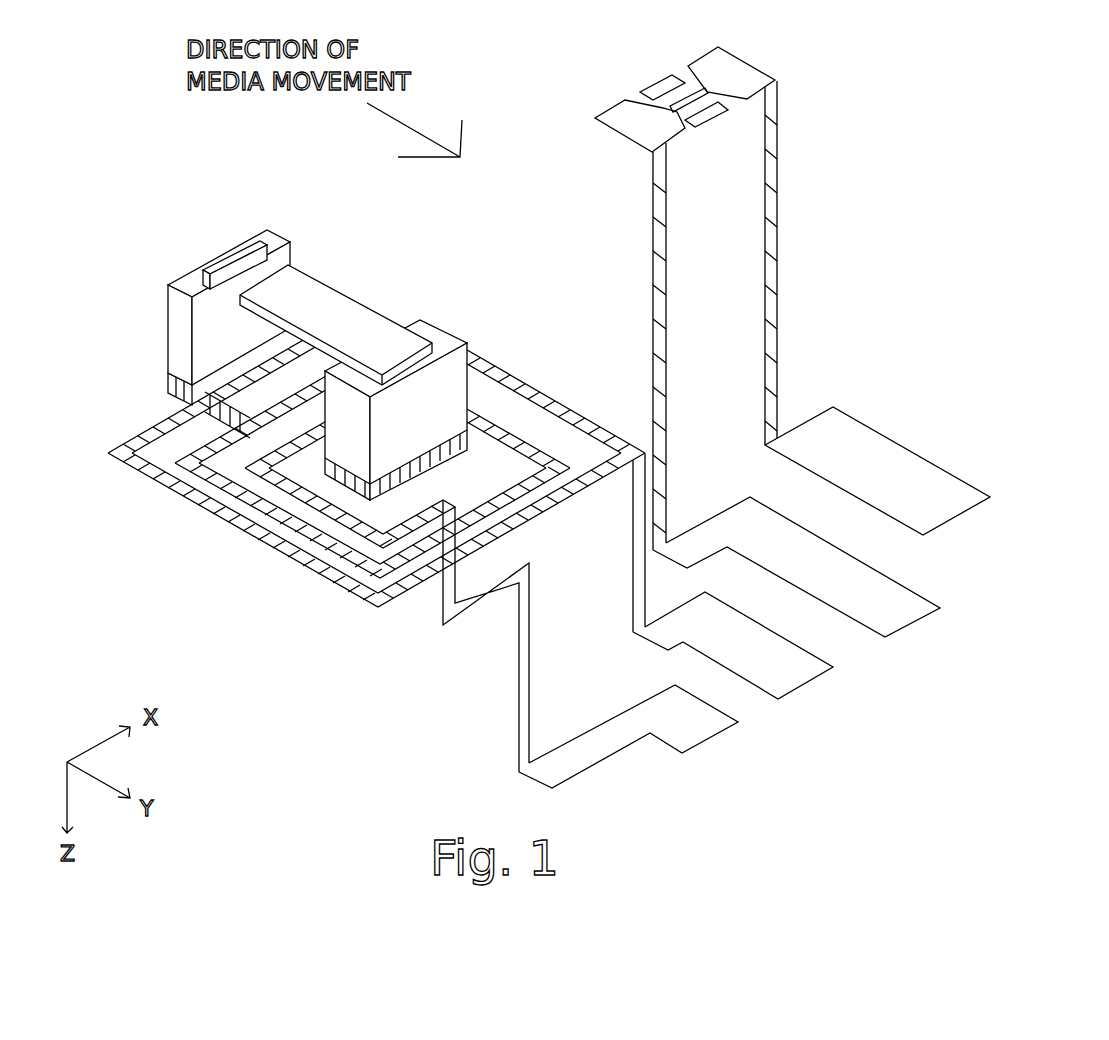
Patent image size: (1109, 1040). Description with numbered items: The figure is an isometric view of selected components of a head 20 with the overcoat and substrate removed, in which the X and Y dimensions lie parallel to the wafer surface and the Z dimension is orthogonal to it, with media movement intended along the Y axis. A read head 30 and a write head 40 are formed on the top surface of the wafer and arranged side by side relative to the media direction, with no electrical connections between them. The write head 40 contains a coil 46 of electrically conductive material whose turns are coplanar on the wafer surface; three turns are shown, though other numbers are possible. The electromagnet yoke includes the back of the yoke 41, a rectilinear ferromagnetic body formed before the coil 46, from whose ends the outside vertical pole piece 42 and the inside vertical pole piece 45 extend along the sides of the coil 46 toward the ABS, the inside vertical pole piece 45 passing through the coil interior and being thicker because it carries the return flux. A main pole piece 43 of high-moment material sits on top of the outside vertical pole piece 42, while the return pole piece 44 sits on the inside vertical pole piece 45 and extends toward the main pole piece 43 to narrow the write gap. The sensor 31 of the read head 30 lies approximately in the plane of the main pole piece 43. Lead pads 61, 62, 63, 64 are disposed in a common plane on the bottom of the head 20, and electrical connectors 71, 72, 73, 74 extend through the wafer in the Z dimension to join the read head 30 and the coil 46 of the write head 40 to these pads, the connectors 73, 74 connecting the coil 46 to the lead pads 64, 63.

The head 20 is at (340, 752).
The read head 30 is at (586, 110).
The sensor 31 is at (688, 92).
The write head 40 is at (435, 278).
The back of the yoke 41 is at (153, 377).
The outside vertical pole piece 42 is at (190, 340).
The main pole piece 43 is at (185, 269).
The return pole piece 44 is at (312, 290).
The inside vertical pole piece 45 is at (431, 441).
The coil 46 is at (267, 537).
The lead pad 61 is at (903, 468).
The lead pad 62 is at (892, 610).
The lead pad 63 is at (797, 670).
The lead pad 64 is at (703, 720).
The electrical connector 71 is at (772, 250).
The electrical connector 72 is at (657, 258).
The electrical connector 73 is at (637, 568).
The electrical connector 74 is at (522, 677).